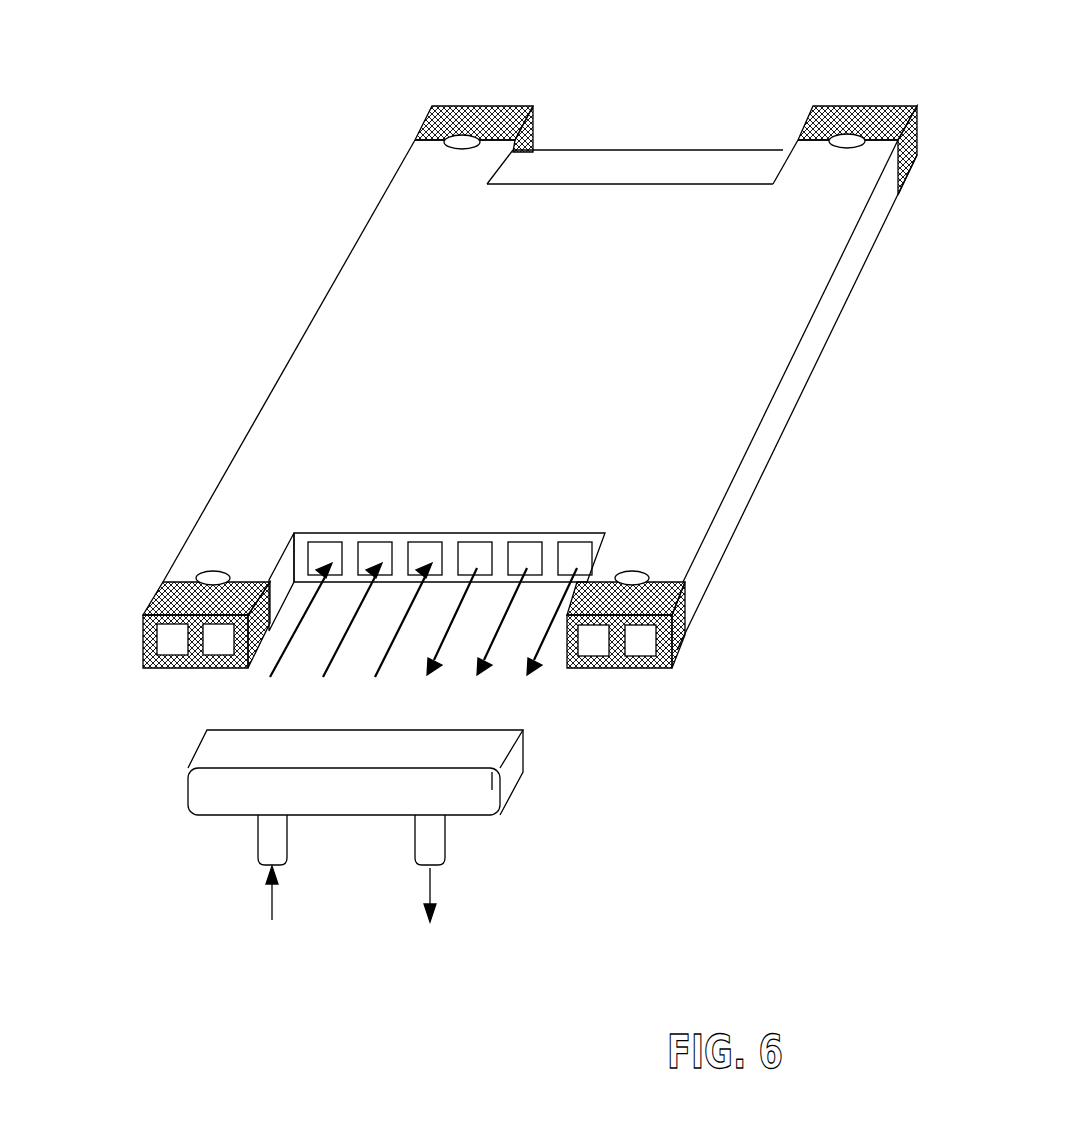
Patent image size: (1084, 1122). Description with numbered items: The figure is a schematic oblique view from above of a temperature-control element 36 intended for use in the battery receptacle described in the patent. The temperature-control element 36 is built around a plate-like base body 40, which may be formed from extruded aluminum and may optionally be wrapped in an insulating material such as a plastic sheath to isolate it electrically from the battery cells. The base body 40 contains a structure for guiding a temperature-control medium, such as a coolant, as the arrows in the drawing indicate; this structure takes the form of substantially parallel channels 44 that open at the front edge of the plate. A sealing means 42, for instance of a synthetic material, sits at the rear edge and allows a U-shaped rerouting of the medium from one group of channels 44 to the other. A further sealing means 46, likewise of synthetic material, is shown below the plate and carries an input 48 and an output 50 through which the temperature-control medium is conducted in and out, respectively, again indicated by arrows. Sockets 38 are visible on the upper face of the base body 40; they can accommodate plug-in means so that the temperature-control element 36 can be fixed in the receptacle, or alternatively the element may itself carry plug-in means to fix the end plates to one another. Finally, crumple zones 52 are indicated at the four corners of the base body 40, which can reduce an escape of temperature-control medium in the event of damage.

The temperature-control element 36 is at (262, 271).
The sockets 38 is at (444, 148).
The base body 40 is at (808, 360).
The sealing means 42 is at (645, 148).
The channels 44 is at (420, 545).
The further sealing means 46 is at (520, 774).
The input 48 is at (255, 845).
The output 50 is at (447, 845).
The crumple zones 52 is at (468, 118).